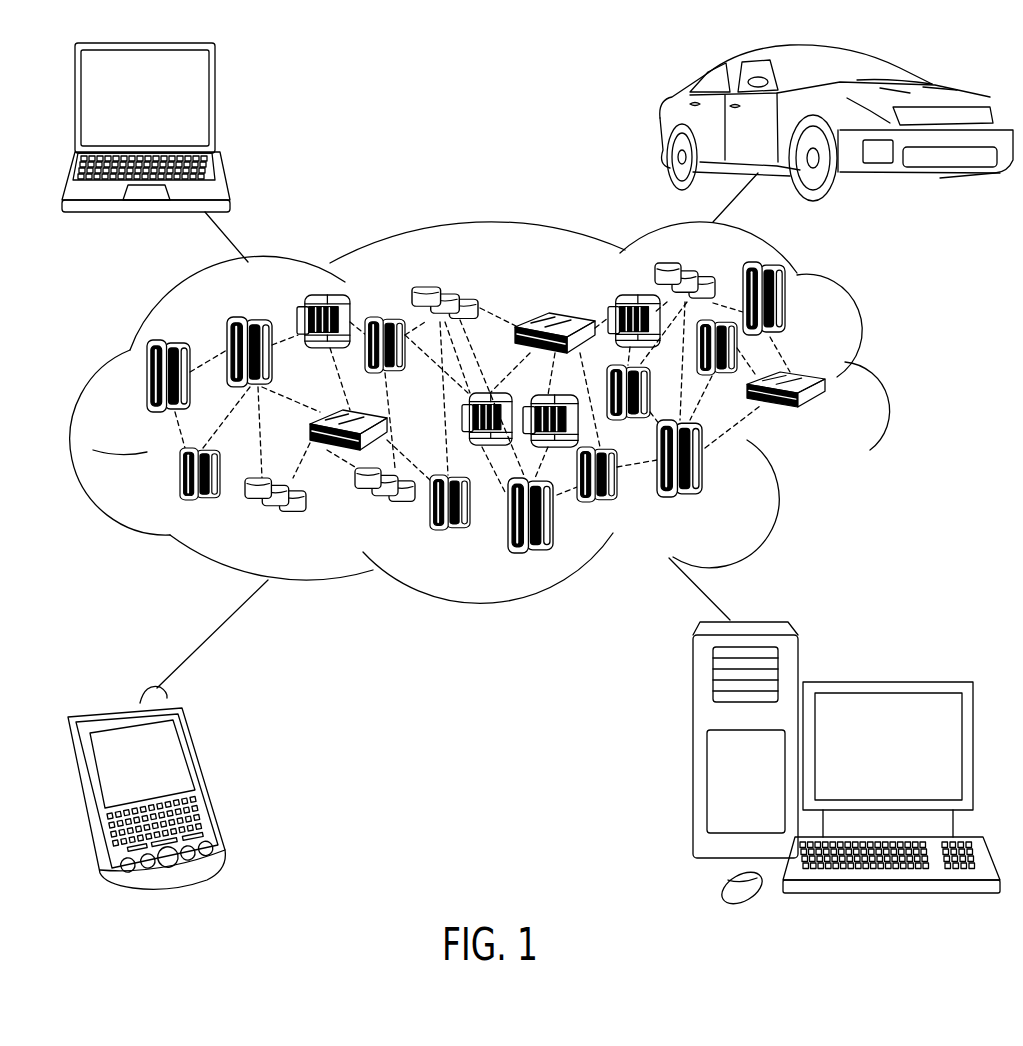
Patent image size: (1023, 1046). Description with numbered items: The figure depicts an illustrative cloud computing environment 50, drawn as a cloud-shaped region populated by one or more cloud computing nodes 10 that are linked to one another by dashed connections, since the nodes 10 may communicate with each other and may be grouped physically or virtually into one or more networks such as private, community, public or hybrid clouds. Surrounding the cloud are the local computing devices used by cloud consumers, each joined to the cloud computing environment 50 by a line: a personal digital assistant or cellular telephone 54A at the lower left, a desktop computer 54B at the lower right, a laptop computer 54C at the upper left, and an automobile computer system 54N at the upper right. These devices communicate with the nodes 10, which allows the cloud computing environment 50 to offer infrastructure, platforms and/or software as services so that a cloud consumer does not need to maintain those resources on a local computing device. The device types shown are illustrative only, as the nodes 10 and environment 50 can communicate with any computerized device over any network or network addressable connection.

The cloud computing node 10 is at (838, 418).
The cloud computing environment 50 is at (888, 385).
The personal digital assistant or cellular telephone 54A is at (207, 778).
The desktop computer 54B is at (887, 680).
The laptop computer 54C is at (216, 103).
The automobile computer system 54N is at (660, 123).